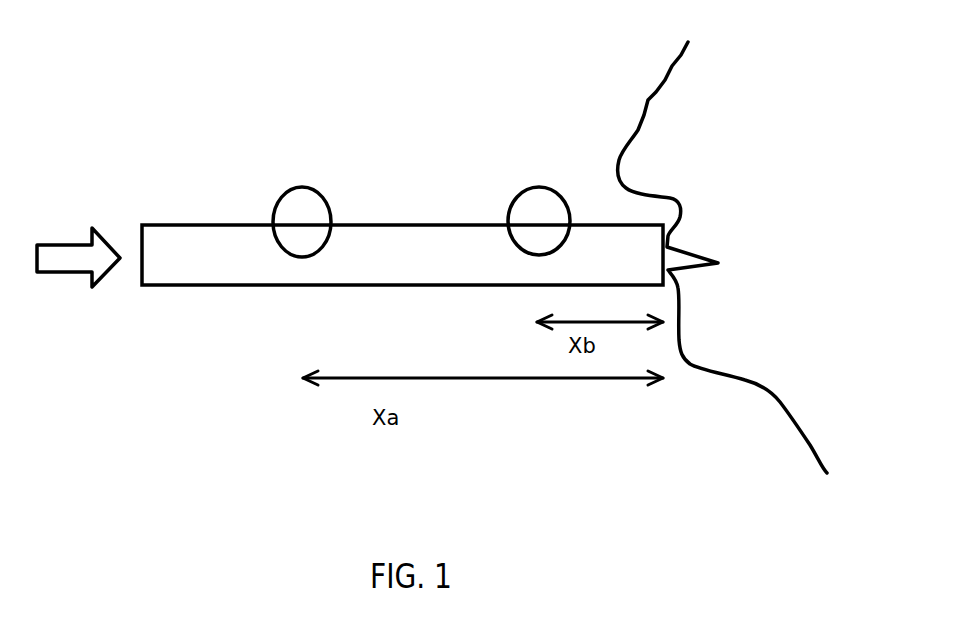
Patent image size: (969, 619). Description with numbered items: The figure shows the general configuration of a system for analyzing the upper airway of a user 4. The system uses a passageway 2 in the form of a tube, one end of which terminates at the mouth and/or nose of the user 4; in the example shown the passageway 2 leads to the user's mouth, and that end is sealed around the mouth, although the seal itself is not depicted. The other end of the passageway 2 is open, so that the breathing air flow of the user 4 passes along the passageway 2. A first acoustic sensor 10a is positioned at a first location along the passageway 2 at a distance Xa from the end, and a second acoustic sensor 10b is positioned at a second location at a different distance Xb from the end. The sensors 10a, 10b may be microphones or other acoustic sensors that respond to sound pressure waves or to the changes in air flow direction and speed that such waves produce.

The passageway 2 is at (396, 225).
The first acoustic sensor 10a is at (275, 206).
The second acoustic sensor 10b is at (515, 208).
The user 4 is at (635, 133).